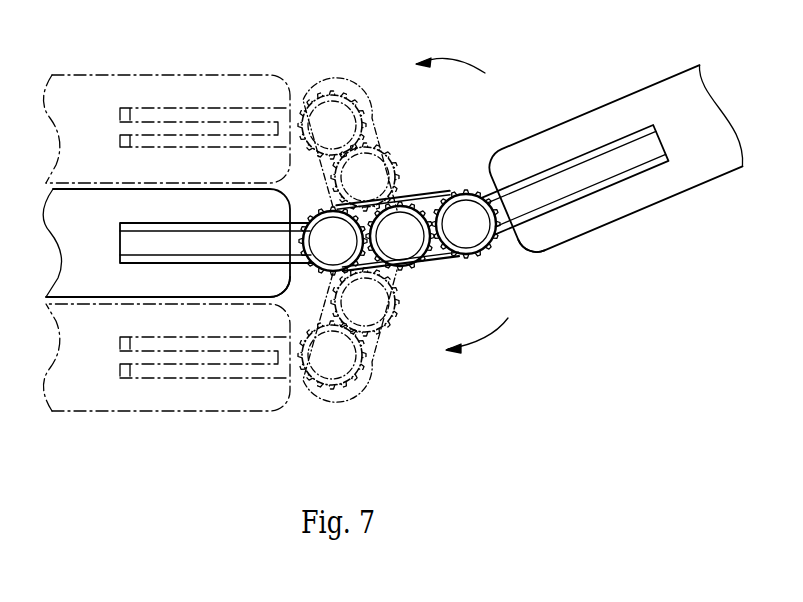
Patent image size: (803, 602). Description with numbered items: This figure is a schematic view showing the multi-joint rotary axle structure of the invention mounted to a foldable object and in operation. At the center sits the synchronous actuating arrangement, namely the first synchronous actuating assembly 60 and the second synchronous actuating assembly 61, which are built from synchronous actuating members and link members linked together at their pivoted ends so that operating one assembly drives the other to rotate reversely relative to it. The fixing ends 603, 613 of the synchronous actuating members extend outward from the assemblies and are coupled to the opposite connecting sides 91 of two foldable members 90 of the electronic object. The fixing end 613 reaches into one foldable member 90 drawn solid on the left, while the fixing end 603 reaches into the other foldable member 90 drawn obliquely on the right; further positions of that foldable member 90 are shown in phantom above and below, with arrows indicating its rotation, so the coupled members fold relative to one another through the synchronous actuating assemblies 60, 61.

The foldable member 90 is at (126, 76).
The fixing end 603 is at (197, 106).
The fixing end 613 is at (150, 223).
The connecting side 91 is at (287, 283).
The first synchronous actuating assembly 60 is at (403, 230).
The second synchronous actuating assembly 61 is at (440, 183).